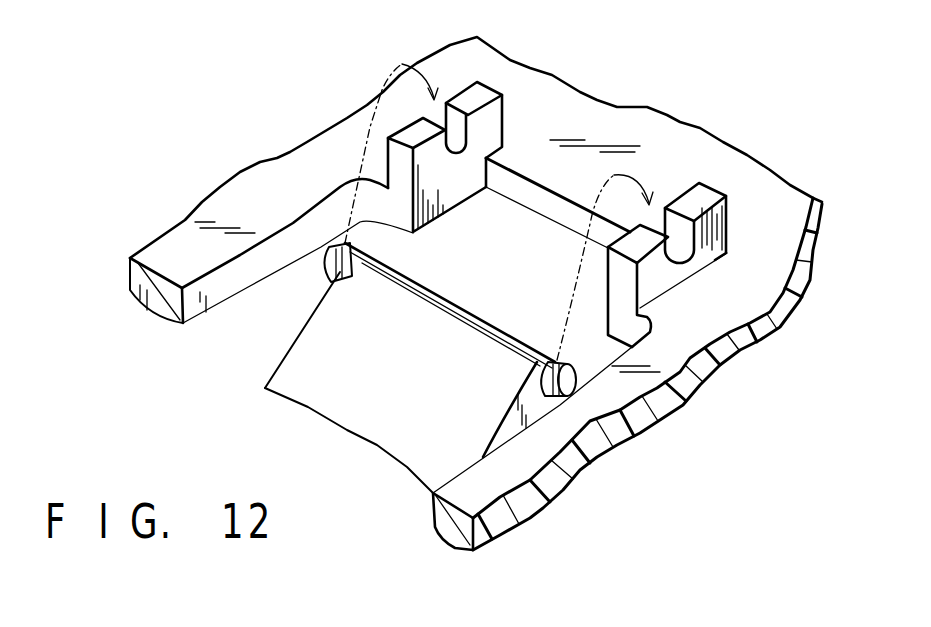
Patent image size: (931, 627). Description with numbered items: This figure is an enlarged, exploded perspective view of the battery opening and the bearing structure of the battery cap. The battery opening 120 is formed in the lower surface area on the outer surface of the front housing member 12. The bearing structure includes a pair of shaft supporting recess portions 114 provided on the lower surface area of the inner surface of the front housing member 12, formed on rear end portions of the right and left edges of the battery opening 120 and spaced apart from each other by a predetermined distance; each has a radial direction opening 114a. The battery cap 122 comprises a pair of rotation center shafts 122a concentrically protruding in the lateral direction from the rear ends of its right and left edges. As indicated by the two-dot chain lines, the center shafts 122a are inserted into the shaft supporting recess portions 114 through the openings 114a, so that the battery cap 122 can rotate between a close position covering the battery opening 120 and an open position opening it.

The front housing member 12 is at (203, 208).
The battery opening 120 is at (221, 293).
The shaft supporting recess portions 114 is at (459, 155).
The openings 114a is at (458, 135).
The battery cap 122 is at (468, 333).
The rotation center shafts 122a is at (322, 252).